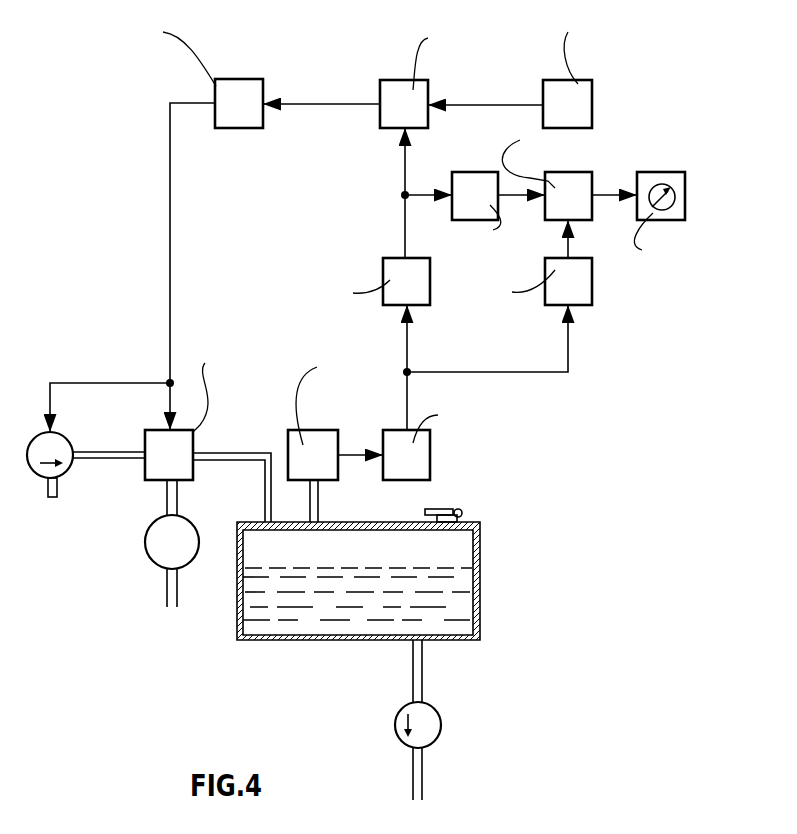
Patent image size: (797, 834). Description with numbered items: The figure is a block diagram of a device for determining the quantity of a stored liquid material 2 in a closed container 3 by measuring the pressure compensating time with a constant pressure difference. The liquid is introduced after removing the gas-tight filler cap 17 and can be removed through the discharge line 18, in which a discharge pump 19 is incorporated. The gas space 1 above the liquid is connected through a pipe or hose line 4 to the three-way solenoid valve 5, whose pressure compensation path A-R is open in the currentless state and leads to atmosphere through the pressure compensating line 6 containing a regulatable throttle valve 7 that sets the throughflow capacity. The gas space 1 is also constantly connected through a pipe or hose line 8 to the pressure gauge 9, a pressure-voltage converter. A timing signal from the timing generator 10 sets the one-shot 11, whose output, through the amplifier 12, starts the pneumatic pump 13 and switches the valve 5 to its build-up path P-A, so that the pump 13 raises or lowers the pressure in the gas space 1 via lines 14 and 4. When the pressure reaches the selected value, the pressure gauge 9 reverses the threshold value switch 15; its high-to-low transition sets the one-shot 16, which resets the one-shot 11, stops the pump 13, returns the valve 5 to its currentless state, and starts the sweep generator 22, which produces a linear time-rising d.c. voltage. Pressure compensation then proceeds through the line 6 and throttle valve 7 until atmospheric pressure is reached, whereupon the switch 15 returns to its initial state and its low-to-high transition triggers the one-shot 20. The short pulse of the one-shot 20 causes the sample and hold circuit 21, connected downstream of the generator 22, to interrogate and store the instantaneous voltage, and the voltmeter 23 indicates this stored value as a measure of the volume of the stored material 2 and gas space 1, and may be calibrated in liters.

The gas space 1 is at (292, 555).
The stored liquid material 2 is at (330, 598).
The closed container 3 is at (387, 641).
The pipe or hose line 4 is at (242, 462).
The three-way solenoid valve 5 is at (185, 440).
The pressure compensating line 6 is at (165, 590).
The regulatable throttle valve 7 is at (185, 567).
The pipe or hose line 8 is at (320, 502).
The pressure gauge 9 is at (306, 440).
The timing generator 10 is at (558, 80).
The one-shot 11 is at (410, 90).
The amplifier 12 is at (244, 88).
The pneumatic pump 13 is at (68, 475).
The pipe or hose line 14 is at (125, 460).
The threshold value switch 15 is at (430, 466).
The one-shot 16 is at (393, 258).
The gas-tight filler cap 17 is at (455, 507).
The discharge line 18 is at (412, 768).
The discharge pump 19 is at (428, 750).
The one-shot 20 is at (592, 288).
The sample and hold circuit 21 is at (588, 175).
The sweep generator 22 is at (462, 172).
The voltmeter 23 is at (653, 173).